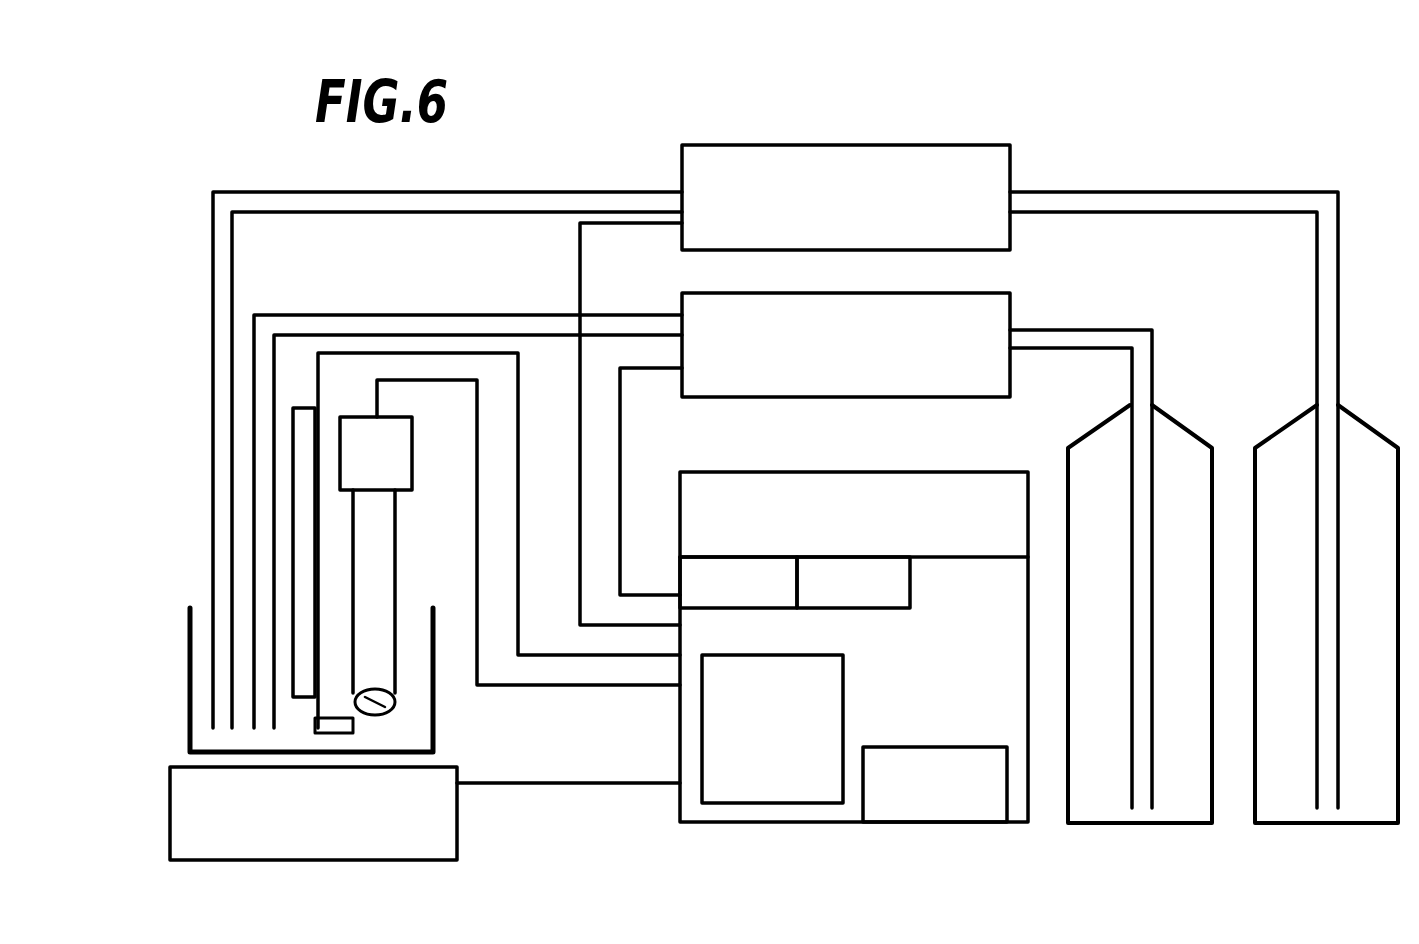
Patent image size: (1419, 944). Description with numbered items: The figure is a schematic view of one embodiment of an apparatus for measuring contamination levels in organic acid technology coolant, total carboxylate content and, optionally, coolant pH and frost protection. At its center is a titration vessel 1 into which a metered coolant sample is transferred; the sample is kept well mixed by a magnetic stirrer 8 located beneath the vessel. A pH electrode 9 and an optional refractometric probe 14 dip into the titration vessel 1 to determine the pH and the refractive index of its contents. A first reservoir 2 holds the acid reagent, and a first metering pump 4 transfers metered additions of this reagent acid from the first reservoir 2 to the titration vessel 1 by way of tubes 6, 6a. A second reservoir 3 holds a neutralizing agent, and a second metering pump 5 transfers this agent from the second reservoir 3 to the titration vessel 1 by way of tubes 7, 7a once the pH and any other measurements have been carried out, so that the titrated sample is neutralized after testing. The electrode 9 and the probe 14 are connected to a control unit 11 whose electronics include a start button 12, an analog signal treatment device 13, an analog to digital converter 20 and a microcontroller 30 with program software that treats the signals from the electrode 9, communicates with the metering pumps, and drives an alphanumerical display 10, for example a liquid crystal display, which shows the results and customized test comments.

The titration vessel 1 is at (190, 722).
The first reservoir 2 is at (1095, 825).
The second reservoir 3 is at (1305, 825).
The first metering pump 4 is at (858, 366).
The second metering pump 5 is at (858, 219).
The tube 6 is at (1087, 340).
The tube 6a is at (497, 322).
The tube 7 is at (497, 200).
The tube 7a is at (1193, 200).
The magnetic stirrer 8 is at (318, 831).
The pH electrode 9 is at (362, 474).
The alphanumerical display 10 is at (826, 530).
The control unit 11 is at (960, 691).
The start button 12 is at (950, 801).
The analog signal treatment device 13 is at (790, 754).
The refractometric probe 14 is at (298, 580).
The analog to digital converter 20 is at (738, 582).
The microcontroller 30 is at (853, 582).